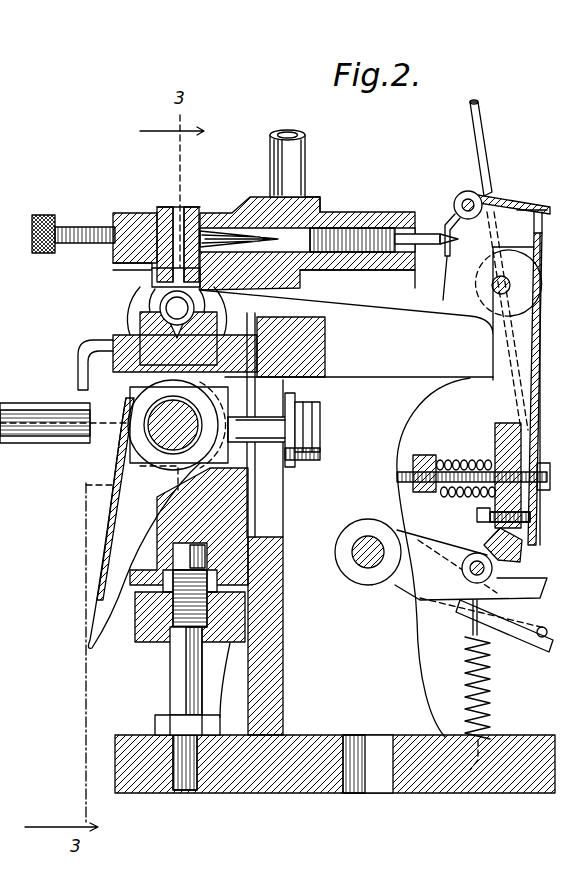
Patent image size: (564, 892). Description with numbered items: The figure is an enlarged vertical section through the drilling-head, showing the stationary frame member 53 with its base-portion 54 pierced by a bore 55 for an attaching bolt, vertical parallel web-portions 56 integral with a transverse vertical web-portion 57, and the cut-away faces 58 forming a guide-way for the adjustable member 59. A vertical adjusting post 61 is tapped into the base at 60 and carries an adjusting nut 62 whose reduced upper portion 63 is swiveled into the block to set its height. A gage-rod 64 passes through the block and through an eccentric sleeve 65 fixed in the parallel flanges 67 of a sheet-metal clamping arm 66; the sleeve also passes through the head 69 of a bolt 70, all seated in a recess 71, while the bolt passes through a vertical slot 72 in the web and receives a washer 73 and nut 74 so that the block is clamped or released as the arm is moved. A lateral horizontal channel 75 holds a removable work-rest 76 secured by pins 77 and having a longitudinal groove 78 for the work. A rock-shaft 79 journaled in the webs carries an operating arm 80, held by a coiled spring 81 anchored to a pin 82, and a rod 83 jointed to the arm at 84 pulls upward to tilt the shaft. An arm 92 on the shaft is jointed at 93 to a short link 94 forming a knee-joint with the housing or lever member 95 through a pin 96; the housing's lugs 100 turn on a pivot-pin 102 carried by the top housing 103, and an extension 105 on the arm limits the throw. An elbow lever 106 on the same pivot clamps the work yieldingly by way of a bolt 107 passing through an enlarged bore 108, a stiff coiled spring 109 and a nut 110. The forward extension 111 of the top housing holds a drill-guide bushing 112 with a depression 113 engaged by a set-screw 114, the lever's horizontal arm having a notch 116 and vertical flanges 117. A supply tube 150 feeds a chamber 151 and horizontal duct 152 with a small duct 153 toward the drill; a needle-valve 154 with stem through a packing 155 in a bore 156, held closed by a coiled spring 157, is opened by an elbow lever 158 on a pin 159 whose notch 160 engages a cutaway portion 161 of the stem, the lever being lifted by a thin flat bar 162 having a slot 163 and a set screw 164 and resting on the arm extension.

The stationary frame member 53 is at (331, 503).
The base-portion 54 is at (430, 793).
The bore 55 is at (376, 775).
The vertical parallel web-portions 56 is at (413, 665).
The transverse vertical web-portion 57 is at (270, 625).
The cut-away guide-way 58 is at (250, 320).
The adjustable member 59 is at (155, 538).
The tapped connection 60 is at (184, 795).
The vertical adjusting post 61 is at (172, 698).
The adjusting nut 62 is at (140, 644).
The reduced upper portion of nut 63 is at (162, 578).
The gage-rod 64 is at (152, 440).
The eccentric sleeve 65 is at (151, 420).
The clamping arm 66 is at (106, 613).
The parallel flanges 67 is at (195, 392).
The bolt head 69 is at (230, 458).
The bolt 70 is at (322, 420).
The recess 71 is at (128, 378).
The vertical slot 72 is at (283, 527).
The washer 73 is at (300, 460).
The nut 74 is at (328, 460).
The lateral horizontal channel 75 is at (113, 342).
The pillow-block or work-rest 76 is at (140, 325).
The pins 77 is at (80, 376).
The longitudinal groove 78 is at (160, 306).
The rock-shaft 79 is at (364, 560).
The operating arm 80 is at (518, 638).
The coiled spring 81 is at (483, 706).
The pin 82 is at (480, 752).
The rod 83 is at (490, 158).
The jointed connection 84 is at (540, 640).
The arm 92 is at (410, 592).
The joint 93 is at (470, 572).
The short link 94 is at (490, 555).
The housing or lever member 95 is at (546, 389).
The pin 96 is at (523, 540).
The lugs 100 is at (478, 258).
The pivot-pin 102 is at (497, 293).
The top housing 103 is at (352, 210).
The extension 105 is at (514, 592).
The elbow lever 106 is at (357, 282).
The bolt 107 is at (402, 476).
The enlarged bore 108 is at (505, 432).
The stiff coiled spring 109 is at (428, 455).
The nut 110 is at (418, 458).
The forward extension of top housing 111 is at (132, 212).
The drill-guide or bushing 112 is at (158, 230).
The depression 113 is at (178, 212).
The set-screw 114 is at (63, 226).
The notch or recess 116 is at (153, 277).
The vertical flanges 117 is at (130, 254).
The supply tube 150 is at (307, 148).
The bore or chamber 151 is at (318, 198).
The horizontal duct 152 is at (234, 243).
The small duct 153 is at (237, 212).
The needle-valve 154 is at (291, 337).
The packing 155 is at (405, 232).
The bore 156 is at (340, 268).
The coiled spring 157 is at (367, 226).
The elbow lever 158 is at (501, 200).
The pin 159 is at (462, 198).
The notch 160 is at (438, 280).
The cutaway portion 161 is at (441, 228).
The thin flat bar 162 is at (535, 370).
The slot 163 is at (490, 492).
The set screw 164 is at (477, 518).